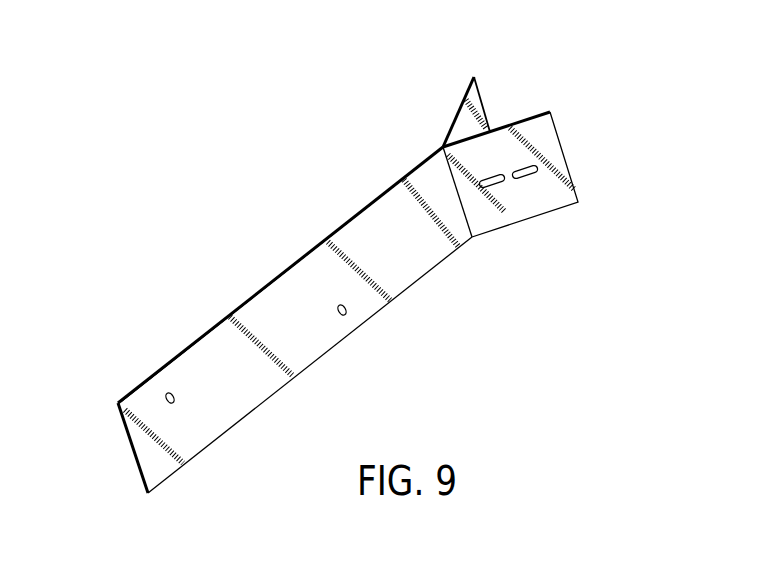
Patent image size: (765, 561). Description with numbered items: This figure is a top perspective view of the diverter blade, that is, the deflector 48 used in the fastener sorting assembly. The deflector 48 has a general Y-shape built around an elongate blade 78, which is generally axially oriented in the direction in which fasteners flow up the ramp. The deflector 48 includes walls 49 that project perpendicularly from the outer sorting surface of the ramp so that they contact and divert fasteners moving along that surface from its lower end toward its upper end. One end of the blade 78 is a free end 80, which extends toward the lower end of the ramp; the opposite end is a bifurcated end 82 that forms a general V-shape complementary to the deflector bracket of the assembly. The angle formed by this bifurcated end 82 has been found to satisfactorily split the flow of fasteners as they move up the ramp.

The deflector 48 is at (375, 197).
The walls 49 is at (423, 247).
The elongate blade 78 is at (258, 313).
The free end 80 is at (133, 452).
The bifurcated end 82 is at (547, 193).